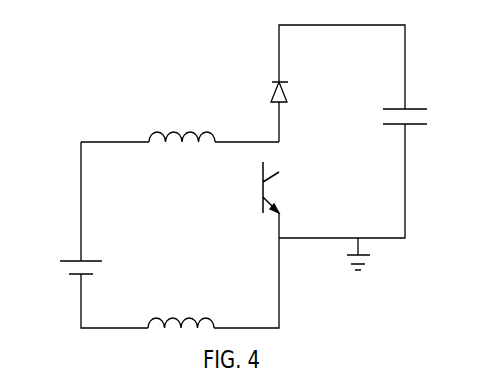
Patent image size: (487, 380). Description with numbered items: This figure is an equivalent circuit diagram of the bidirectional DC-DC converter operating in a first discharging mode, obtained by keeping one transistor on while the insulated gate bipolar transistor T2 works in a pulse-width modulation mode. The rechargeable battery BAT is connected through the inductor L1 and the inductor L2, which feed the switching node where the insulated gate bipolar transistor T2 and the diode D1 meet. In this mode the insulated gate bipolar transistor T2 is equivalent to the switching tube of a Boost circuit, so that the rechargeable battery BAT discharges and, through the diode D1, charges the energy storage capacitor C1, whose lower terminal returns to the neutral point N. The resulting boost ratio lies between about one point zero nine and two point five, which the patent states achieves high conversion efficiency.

The inductor L1 is at (182, 123).
The inductor L2 is at (181, 309).
The diode D1 is at (295, 87).
The insulated gate bipolar transistor T2 is at (253, 177).
The energy storage capacitor C1 is at (422, 117).
The neutral point N is at (358, 268).
The rechargeable battery BAT is at (55, 264).